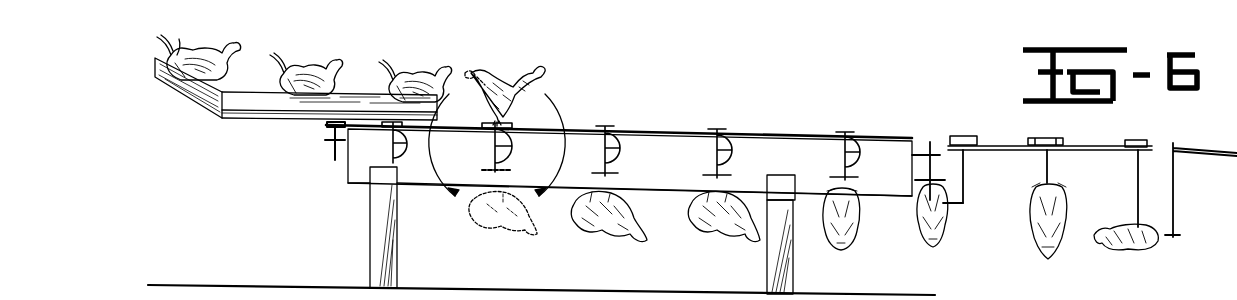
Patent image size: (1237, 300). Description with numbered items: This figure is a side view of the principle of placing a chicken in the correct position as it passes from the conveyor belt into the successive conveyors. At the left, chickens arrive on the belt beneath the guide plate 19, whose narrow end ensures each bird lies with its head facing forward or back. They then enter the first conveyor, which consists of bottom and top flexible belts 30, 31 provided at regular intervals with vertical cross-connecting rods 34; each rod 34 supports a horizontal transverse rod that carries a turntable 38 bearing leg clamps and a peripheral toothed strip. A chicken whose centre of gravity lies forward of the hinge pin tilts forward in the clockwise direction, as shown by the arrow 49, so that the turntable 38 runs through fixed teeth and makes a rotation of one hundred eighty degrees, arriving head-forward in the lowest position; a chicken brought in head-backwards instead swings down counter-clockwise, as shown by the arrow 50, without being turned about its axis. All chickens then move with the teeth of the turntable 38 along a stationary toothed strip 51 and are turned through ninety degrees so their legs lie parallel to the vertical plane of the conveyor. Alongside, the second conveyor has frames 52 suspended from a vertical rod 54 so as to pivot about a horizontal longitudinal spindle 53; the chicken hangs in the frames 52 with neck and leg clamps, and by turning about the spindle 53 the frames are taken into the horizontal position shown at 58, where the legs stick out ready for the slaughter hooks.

The guide plate 19 is at (258, 103).
The bottom flexible belt 30 is at (675, 192).
The top flexible belt 31 is at (658, 132).
The vertical cross-connecting rod 34 is at (597, 128).
The turntable 38 is at (703, 172).
The arrow 49 is at (553, 180).
The arrow 50 is at (428, 180).
The stationary toothed strip 51 is at (780, 175).
The frame 52 is at (943, 210).
The horizontal longitudinal spindle 53 is at (965, 205).
The vertical rod 54 is at (967, 167).
The horizontal position 58 is at (1130, 250).